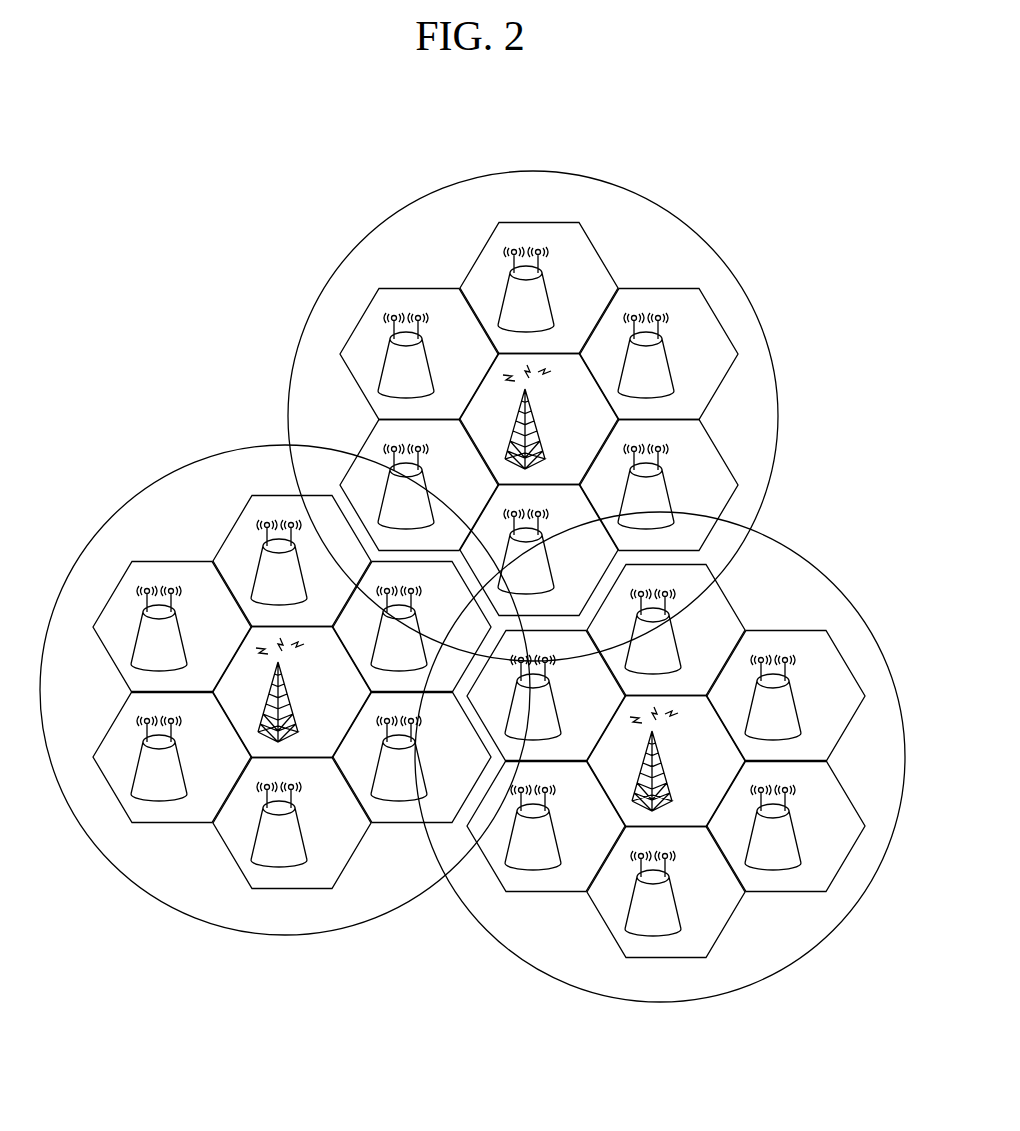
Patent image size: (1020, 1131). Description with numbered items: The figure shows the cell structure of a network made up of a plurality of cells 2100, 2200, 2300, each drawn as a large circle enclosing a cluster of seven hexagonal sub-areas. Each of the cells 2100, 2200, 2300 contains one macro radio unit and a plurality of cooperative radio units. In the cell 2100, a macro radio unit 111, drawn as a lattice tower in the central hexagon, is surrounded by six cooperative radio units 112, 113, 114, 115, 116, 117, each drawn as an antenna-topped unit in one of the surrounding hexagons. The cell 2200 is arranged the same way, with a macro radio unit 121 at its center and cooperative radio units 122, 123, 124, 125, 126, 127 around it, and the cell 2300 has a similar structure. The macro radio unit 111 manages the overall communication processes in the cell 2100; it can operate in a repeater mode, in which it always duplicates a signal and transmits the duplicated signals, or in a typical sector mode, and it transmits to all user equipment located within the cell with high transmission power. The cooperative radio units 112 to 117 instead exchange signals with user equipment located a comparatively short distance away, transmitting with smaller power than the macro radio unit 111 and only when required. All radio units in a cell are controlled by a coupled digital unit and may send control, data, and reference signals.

The macro radio unit 111 is at (293, 696).
The cooperative radio unit 112 is at (181, 765).
The cooperative radio unit 113 is at (301, 831).
The cooperative radio unit 114 is at (421, 765).
The cooperative radio unit 115 is at (421, 635).
The cooperative radio unit 116 is at (301, 569).
The cooperative radio unit 117 is at (181, 635).
The macro radio unit 121 is at (538, 417).
The cooperative radio unit 122 is at (428, 493).
The cooperative radio unit 123 is at (548, 558).
The cooperative radio unit 124 is at (668, 493).
The cooperative radio unit 125 is at (668, 362).
The cooperative radio unit 126 is at (548, 296).
The cooperative radio unit 127 is at (428, 362).
The cell 2100 is at (228, 452).
The cell 2200 is at (665, 208).
The cell 2300 is at (530, 965).